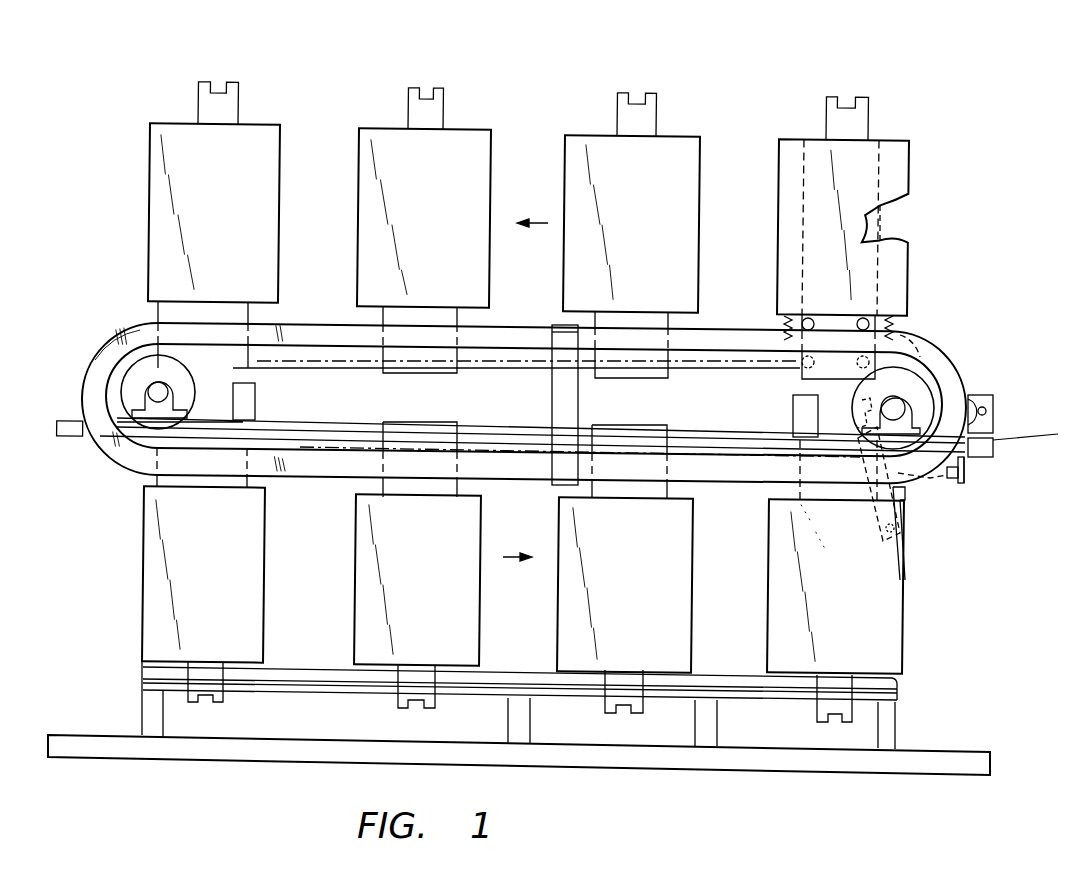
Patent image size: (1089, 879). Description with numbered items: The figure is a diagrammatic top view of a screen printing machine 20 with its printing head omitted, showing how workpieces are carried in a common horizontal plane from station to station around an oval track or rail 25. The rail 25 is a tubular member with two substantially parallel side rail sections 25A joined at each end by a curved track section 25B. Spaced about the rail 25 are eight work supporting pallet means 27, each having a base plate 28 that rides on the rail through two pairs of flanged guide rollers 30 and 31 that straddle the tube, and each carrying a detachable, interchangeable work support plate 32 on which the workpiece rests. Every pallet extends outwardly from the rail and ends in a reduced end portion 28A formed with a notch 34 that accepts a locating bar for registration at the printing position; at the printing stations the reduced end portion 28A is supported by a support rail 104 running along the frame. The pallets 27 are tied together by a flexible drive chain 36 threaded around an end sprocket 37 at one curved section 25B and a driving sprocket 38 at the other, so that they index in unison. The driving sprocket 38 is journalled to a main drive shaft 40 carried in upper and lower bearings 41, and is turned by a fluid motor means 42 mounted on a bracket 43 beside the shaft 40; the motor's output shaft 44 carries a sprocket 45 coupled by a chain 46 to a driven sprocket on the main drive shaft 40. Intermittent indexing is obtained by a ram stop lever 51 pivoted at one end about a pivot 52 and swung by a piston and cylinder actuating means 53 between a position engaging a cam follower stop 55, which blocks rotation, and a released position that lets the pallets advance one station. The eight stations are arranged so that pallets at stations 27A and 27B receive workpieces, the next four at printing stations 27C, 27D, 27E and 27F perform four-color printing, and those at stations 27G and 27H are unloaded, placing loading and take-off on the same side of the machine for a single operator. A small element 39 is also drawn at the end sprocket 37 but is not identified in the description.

The screen printing machine 20 is at (990, 305).
The oval track or rail 25 is at (968, 384).
The side rail section 25A is at (500, 330).
The curved track section 25B is at (100, 352).
The work supporting pallet means 27 is at (701, 200).
The loading station 27A is at (457, 129).
The loading station 27B is at (270, 125).
The printing station 27C is at (141, 569).
The printing station 27D is at (353, 552).
The printing station 27E is at (557, 622).
The printing station 27F is at (769, 611).
The take-off station 27G is at (911, 282).
The take-off station 27H is at (690, 263).
The pallet base plate 28 is at (880, 222).
The extended reduced end portion 28A is at (237, 95).
The guide rollers 30 is at (808, 330).
The guide rollers 31 is at (798, 375).
The work support plate 32 is at (906, 160).
The notch 34 is at (205, 700).
The flexible drive member (chain) 36 is at (330, 362).
The end sprocket 37 is at (130, 384).
The driving sprocket 38 is at (862, 390).
The shaft 39 is at (168, 394).
The main drive shaft 40 is at (966, 380).
The bearings 41 is at (897, 407).
The motor means 42 is at (1037, 439).
The bracket 43 is at (998, 447).
The output shaft 44 is at (993, 420).
The sprocket 45 is at (993, 410).
The flexible drive or chain 46 is at (973, 471).
The ram stop lever 51 is at (896, 492).
The pivot 52 is at (900, 532).
The actuating means (piston and cylinder assembly) 53 is at (940, 487).
The cam follower stop 55 is at (906, 347).
The support rail 104 is at (325, 680).